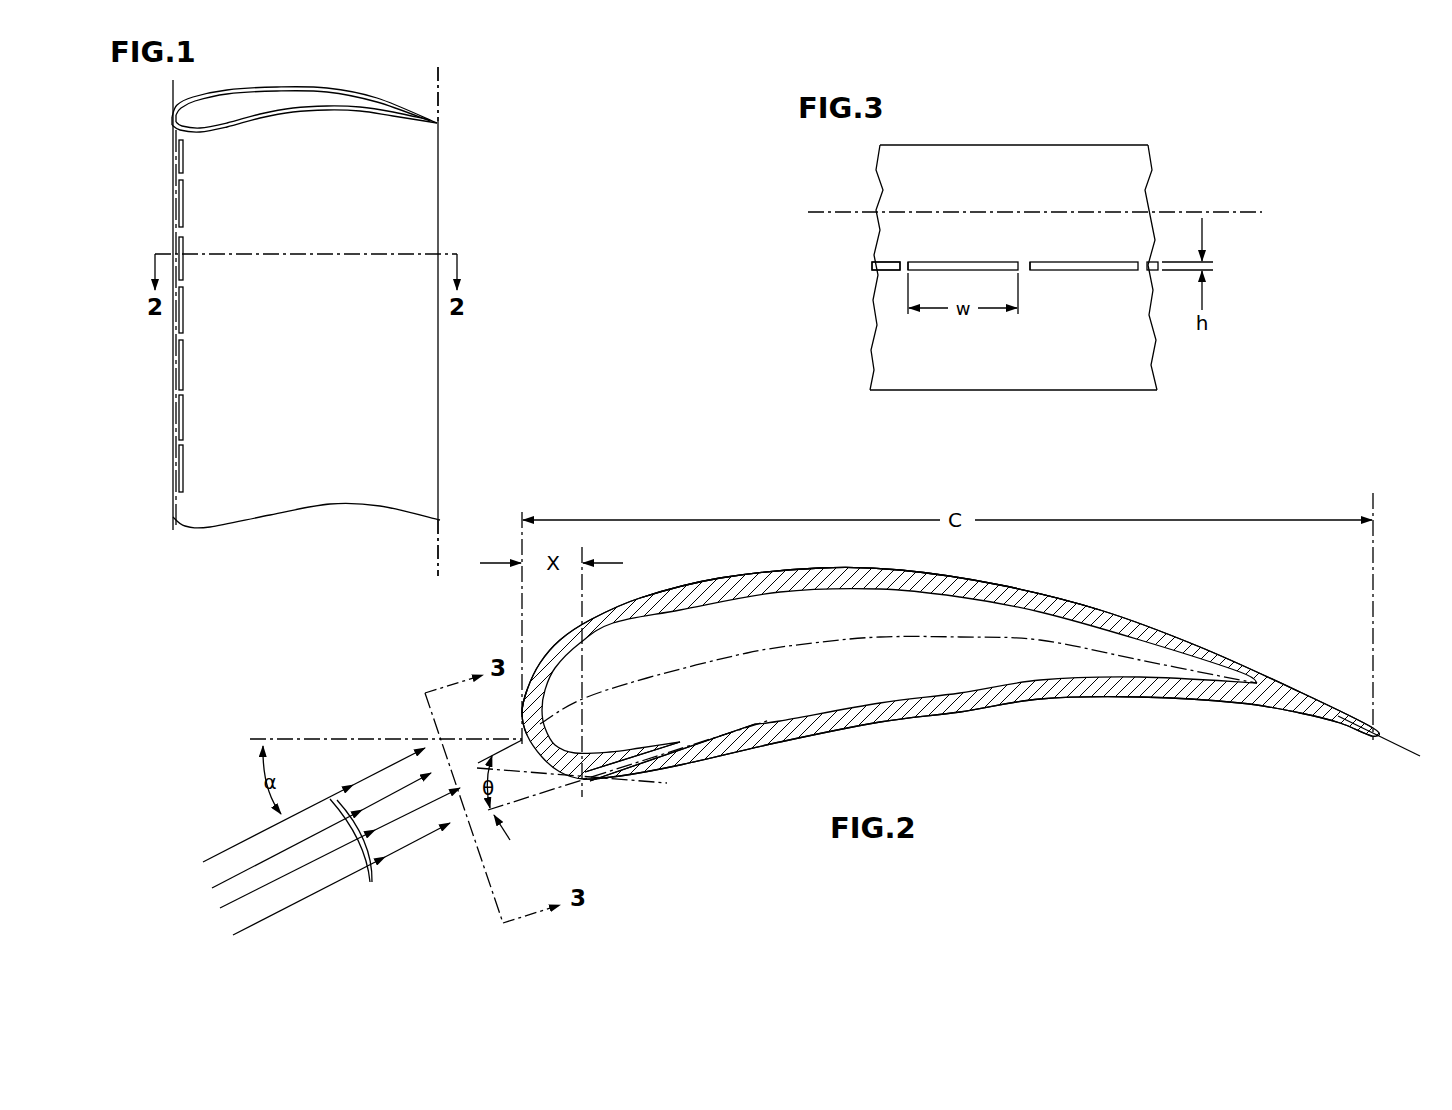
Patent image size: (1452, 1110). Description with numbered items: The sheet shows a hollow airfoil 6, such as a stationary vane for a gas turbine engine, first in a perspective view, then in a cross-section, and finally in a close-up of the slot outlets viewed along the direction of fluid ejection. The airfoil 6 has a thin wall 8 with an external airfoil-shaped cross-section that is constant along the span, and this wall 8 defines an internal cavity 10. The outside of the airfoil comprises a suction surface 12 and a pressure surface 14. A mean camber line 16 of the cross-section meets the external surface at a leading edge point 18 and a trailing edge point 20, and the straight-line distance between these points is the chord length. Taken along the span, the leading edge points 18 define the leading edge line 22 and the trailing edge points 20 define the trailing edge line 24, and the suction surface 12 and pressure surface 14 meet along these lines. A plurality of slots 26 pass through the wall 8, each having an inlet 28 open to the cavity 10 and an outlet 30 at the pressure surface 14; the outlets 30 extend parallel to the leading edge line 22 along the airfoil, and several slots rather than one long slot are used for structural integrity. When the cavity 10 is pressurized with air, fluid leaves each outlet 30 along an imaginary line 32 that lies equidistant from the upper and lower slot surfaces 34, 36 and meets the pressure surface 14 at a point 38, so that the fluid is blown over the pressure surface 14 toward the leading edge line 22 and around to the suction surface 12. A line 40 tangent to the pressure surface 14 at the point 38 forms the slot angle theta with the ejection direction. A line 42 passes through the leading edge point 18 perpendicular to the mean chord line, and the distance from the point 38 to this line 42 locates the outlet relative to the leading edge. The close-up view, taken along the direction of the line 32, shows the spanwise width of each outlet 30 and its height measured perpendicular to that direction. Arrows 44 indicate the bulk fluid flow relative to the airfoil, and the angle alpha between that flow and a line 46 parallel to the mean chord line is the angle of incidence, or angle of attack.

In FIG. 1, the hollow airfoil 6 is at (157, 124).
In FIG. 2, the hollow airfoil 6 is at (933, 735).
In FIG. 2, the thin wall 8 is at (994, 588).
In FIG. 2, the internal cavity 10 is at (960, 675).
In FIG. 2, the suction surface 12 is at (1133, 612).
In FIG. 2, the pressure surface 14 is at (1023, 700).
In FIG. 2, the mean camber line 16 is at (840, 640).
In FIG. 2, the leading edge point 18 is at (522, 741).
In FIG. 2, the trailing edge point 20 is at (1383, 733).
In FIG. 1, the leading edge line 22 is at (176, 95).
In FIG. 3, the leading edge line 22 is at (1240, 207).
In FIG. 1, the trailing edge line 24 is at (438, 105).
In FIG. 3, the slots 26 is at (886, 262).
In FIG. 2, the slots 26 is at (665, 758).
In FIG. 2, the slot inlet 28 is at (687, 744).
In FIG. 1, the slot outlet 30 is at (180, 183).
In FIG. 3, the slot outlet 30 is at (990, 262).
In FIG. 2, the slot outlet 30 is at (593, 782).
In FIG. 2, the imaginary line 32 is at (514, 804).
In FIG. 3, the upper slot surface 34 is at (1067, 265).
In FIG. 3, the lower slot surface 36 is at (973, 265).
In FIG. 2, the point 38 is at (572, 686).
In FIG. 2, the tangent line 40 is at (458, 798).
In FIG. 2, the line 42 is at (521, 531).
In FIG. 2, the arrows 44 is at (371, 878).
In FIG. 2, the line 46 is at (316, 738).